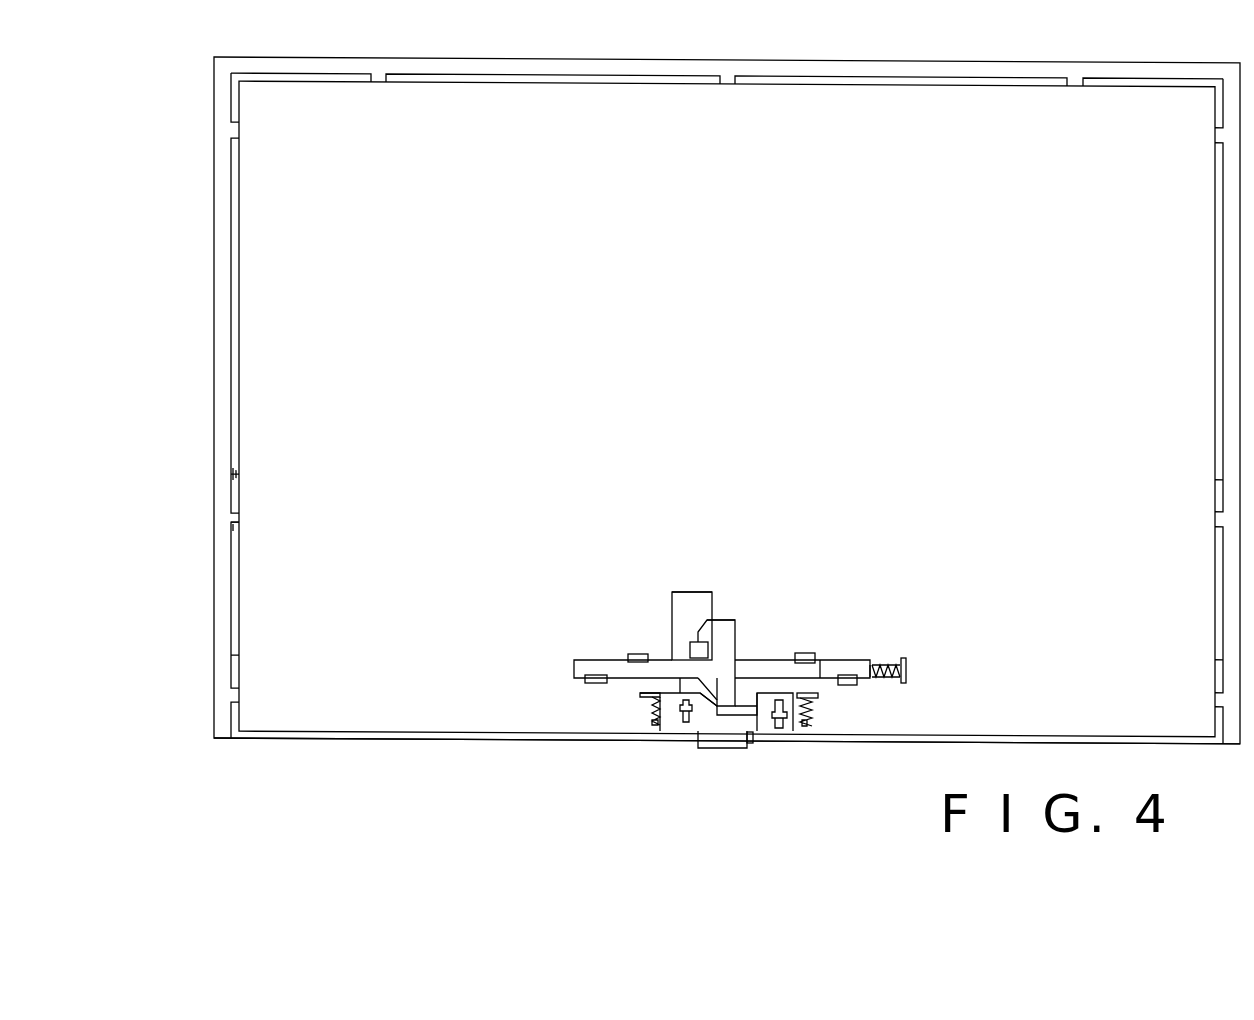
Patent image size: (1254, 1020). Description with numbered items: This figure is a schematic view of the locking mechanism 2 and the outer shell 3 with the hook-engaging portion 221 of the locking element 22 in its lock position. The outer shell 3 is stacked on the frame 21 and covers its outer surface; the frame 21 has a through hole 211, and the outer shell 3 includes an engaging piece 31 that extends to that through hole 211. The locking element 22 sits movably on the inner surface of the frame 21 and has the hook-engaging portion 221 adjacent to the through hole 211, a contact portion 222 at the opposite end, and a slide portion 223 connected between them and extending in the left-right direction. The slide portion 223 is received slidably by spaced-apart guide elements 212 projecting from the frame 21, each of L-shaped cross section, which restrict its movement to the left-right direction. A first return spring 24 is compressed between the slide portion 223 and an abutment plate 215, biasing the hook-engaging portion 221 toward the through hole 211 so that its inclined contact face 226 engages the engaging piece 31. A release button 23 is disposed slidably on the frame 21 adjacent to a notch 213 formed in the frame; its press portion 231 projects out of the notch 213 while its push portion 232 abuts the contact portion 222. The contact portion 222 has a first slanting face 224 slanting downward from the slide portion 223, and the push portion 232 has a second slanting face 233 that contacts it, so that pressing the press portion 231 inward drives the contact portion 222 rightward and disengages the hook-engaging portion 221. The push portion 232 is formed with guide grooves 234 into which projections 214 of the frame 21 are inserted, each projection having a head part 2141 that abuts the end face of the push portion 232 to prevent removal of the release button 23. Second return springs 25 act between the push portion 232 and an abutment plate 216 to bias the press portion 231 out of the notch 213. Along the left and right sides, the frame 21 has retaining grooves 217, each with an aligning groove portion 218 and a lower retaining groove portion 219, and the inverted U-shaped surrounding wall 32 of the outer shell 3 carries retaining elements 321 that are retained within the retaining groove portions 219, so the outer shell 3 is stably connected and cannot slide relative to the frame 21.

The locking mechanism 2 is at (853, 523).
The outer shell 3 is at (757, 57).
The frame 21 is at (363, 742).
The locking element 22 is at (748, 606).
The release button 23 is at (697, 750).
The first return spring 24 is at (905, 657).
The second return spring 25 is at (808, 724).
The engaging piece 31 is at (686, 694).
The surrounding wall 32 is at (815, 68).
The through hole 211 is at (682, 586).
The guide element 212 is at (808, 654).
The notch 213 is at (749, 737).
The projection 214 is at (684, 700).
The abutment plate 215 is at (914, 668).
The abutment plate 216 is at (816, 698).
The retaining groove 217 is at (242, 499).
The aligning groove portion 218 is at (235, 474).
The retaining groove portion 219 is at (233, 531).
The hook-engaging portion 221 is at (735, 615).
The contact portion 222 is at (724, 698).
The slide portion 223 is at (822, 670).
The first slanting face 224 is at (708, 690).
The inclined contact face 226 is at (700, 646).
The press portion 231 is at (723, 744).
The push portion 232 is at (667, 711).
The second slanting face 233 is at (712, 696).
The guide groove 234 is at (682, 722).
The retaining element 321 is at (238, 516).
The head part 2141 is at (780, 720).